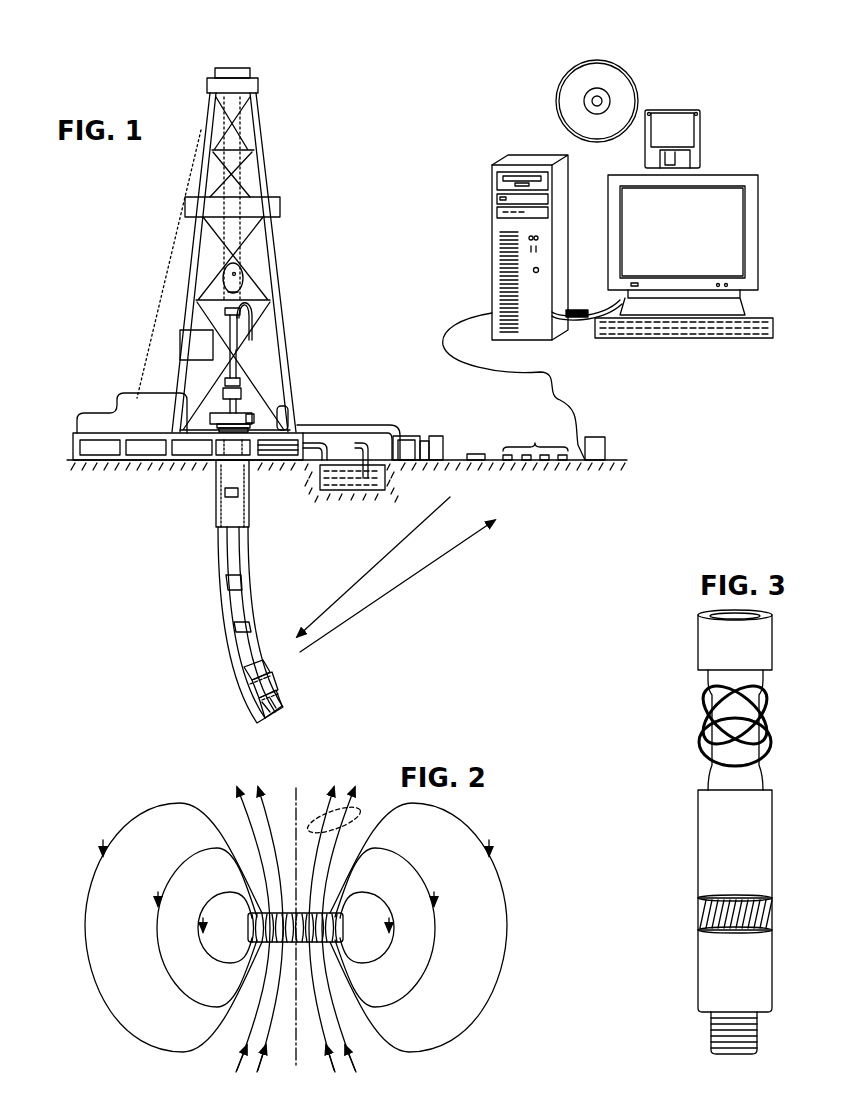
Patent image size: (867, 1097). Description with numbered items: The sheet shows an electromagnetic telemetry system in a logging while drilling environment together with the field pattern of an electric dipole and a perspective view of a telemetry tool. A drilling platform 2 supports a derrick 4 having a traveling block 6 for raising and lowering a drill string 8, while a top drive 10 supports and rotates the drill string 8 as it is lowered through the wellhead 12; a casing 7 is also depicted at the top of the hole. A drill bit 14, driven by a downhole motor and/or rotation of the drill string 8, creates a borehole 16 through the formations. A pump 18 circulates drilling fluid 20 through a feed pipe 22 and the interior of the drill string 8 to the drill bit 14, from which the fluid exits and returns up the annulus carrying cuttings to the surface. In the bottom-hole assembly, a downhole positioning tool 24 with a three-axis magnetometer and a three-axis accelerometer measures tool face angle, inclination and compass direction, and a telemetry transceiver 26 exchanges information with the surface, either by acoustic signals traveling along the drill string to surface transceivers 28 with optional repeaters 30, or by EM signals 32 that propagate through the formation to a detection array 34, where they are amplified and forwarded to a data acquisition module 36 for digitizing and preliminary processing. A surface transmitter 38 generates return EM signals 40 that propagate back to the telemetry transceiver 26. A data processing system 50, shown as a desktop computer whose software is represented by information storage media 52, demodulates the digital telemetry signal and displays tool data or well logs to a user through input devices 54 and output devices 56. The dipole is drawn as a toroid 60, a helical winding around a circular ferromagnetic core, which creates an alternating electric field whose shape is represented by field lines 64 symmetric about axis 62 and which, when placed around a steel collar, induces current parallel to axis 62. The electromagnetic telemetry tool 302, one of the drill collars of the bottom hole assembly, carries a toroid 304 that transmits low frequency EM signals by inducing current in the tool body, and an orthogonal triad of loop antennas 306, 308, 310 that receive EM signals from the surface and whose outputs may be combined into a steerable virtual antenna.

In FIG. 1, the drilling platform 2 is at (74, 440).
In FIG. 1, the derrick 4 is at (267, 154).
In FIG. 1, the traveling block 6 is at (239, 268).
In FIG. 1, the casing 7 is at (225, 538).
In FIG. 1, the drill string 8 is at (239, 563).
In FIG. 1, the top drive 10 is at (234, 326).
In FIG. 1, the wellhead 12 is at (250, 413).
In FIG. 1, the drill bit 14 is at (280, 703).
In FIG. 1, the borehole 16 is at (246, 568).
In FIG. 1, the pump 18 is at (405, 437).
In FIG. 1, the drilling fluid 20 is at (324, 484).
In FIG. 1, the feed pipe 22 is at (357, 425).
In FIG. 1, the downhole positioning tool 24 is at (255, 692).
In FIG. 1, the telemetry transceiver 26 is at (247, 671).
In FIG. 1, the surface transceivers 28 is at (233, 386).
In FIG. 1, the repeaters 30 is at (228, 590).
In FIG. 1, the EM signals 32 is at (364, 611).
In FIG. 1, the detection array 34 is at (535, 440).
In FIG. 1, the data acquisition module 36 is at (597, 436).
In FIG. 1, the surface transmitter 38 is at (476, 453).
In FIG. 1, the return EM signals 40 is at (341, 597).
In FIG. 1, the data processing system 50 is at (563, 268).
In FIG. 1, the information storage media 52 is at (660, 110).
In FIG. 1, the input devices 54 is at (740, 338).
In FIG. 1, the output devices 56 is at (740, 290).
In FIG. 2, the toroid 60 is at (344, 924).
In FIG. 2, the axis 62 is at (297, 1055).
In FIG. 2, the field lines 64 is at (360, 828).
In FIG. 3, the electromagnetic telemetry tool 302 is at (698, 642).
In FIG. 3, the toroid 304 is at (700, 917).
In FIG. 3, the loop antenna 306 is at (702, 694).
In FIG. 3, the loop antenna 308 is at (702, 727).
In FIG. 3, the loop antenna 310 is at (702, 758).